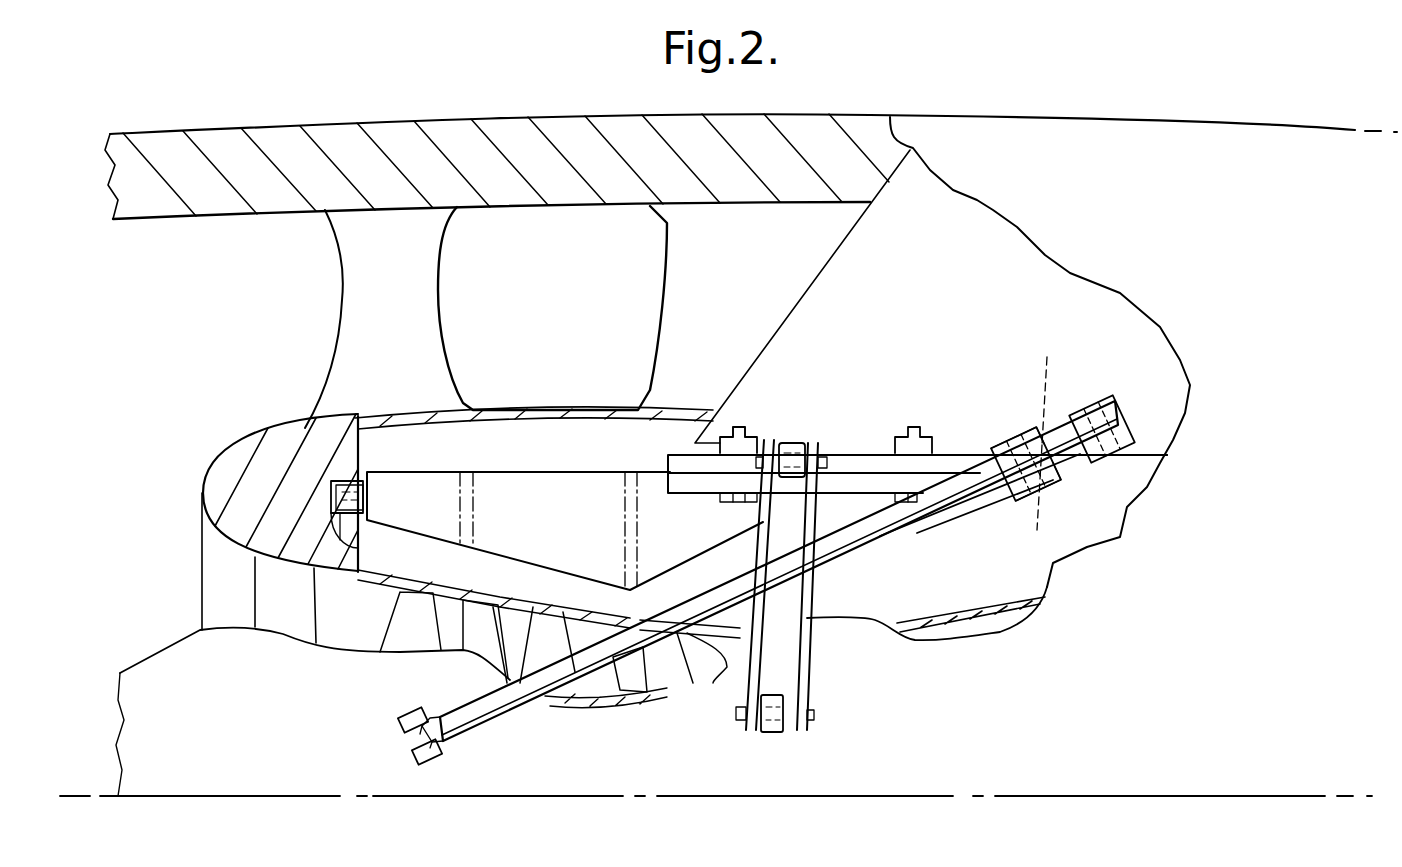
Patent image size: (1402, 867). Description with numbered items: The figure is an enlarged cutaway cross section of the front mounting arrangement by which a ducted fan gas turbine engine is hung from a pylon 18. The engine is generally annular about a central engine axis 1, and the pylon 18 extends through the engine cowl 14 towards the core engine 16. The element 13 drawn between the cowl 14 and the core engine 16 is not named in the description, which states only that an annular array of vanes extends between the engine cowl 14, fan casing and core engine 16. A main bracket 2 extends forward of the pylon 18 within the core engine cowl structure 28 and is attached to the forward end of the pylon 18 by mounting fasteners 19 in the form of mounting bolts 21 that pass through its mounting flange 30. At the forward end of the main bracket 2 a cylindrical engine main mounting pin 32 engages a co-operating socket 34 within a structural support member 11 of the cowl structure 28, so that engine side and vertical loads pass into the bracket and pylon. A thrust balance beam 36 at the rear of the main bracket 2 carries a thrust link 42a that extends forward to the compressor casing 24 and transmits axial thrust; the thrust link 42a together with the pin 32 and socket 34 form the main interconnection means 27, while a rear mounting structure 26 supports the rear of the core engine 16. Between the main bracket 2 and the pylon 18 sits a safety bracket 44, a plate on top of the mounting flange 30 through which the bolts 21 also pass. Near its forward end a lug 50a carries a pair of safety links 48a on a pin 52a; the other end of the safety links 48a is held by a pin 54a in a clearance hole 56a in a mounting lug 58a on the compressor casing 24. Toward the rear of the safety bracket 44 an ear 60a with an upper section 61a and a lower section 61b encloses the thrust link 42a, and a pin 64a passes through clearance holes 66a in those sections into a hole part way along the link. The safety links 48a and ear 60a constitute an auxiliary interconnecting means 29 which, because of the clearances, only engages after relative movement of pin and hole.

The central engine axis 1 is at (1258, 797).
The main bracket 2 is at (540, 500).
The structural support member 11 is at (262, 520).
The vane 13 is at (367, 283).
The engine cowl 14 is at (213, 170).
The core engine 16 is at (980, 668).
The pylon 18 is at (1020, 237).
The mounting fasteners 19 is at (740, 424).
The mounting bolts 21 is at (747, 427).
The compressor casing 24 is at (450, 407).
The rear mounting structure 26 is at (600, 395).
The main interconnection means 27 is at (318, 474).
The core engine cowl structure 28 is at (377, 457).
The auxiliary interconnecting means 29 is at (1050, 416).
The mounting flange 30 is at (683, 483).
The engine main mounting pin 32 is at (366, 495).
The socket 34 is at (340, 533).
The thrust balance beam 36 is at (1113, 398).
The thrust link 42a is at (887, 528).
The safety bracket 44 is at (950, 467).
The safety links 48a is at (764, 523).
The lug 50a is at (790, 477).
The pin 52a is at (828, 450).
The pin 54a is at (697, 750).
The clearance hole 56a is at (774, 732).
The mounting lug 58a is at (805, 690).
The ear 60a is at (997, 447).
The upper section 61a is at (1054, 390).
The lower section 61b is at (1060, 478).
The pin 64a is at (1061, 499).
The clearance hole 66a is at (1010, 503).